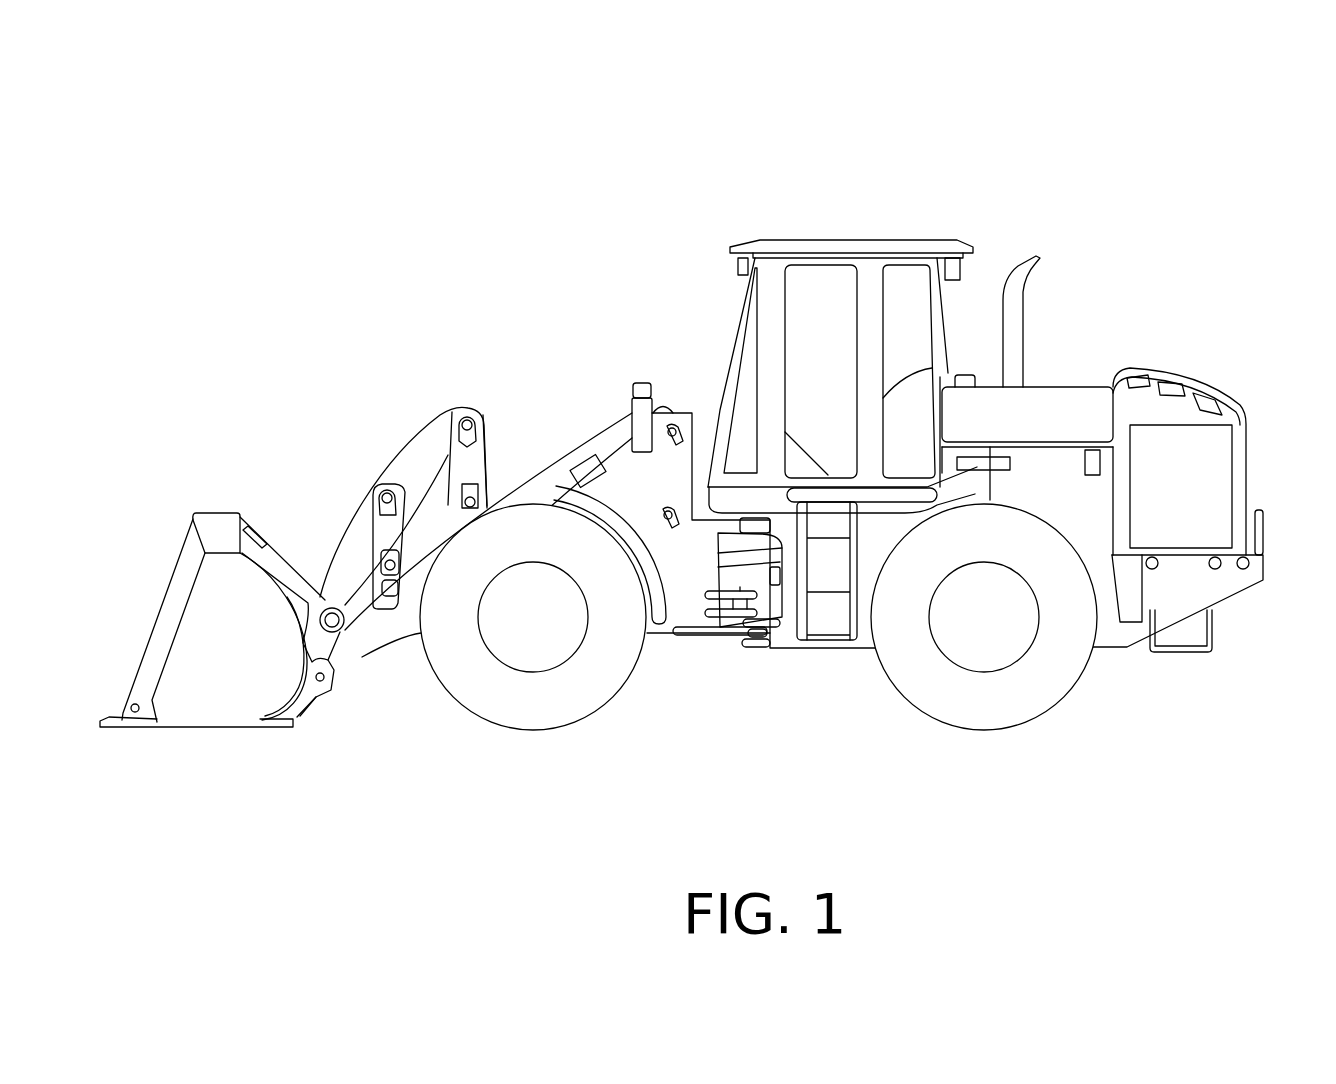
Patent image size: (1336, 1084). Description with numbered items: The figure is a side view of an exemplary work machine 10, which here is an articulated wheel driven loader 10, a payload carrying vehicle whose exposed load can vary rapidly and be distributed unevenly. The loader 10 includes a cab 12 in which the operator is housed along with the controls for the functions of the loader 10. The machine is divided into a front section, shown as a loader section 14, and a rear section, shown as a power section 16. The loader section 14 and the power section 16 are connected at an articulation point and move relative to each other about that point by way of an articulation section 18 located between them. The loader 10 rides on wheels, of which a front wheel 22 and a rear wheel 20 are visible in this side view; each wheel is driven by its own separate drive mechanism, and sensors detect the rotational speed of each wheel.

The work machine 10 is at (1002, 170).
The cab 12 is at (674, 274).
The loader section 14 is at (259, 348).
The power section 16 is at (1188, 329).
The articulation section 18 is at (727, 672).
The wheel 20 is at (987, 730).
The wheel 22 is at (497, 728).